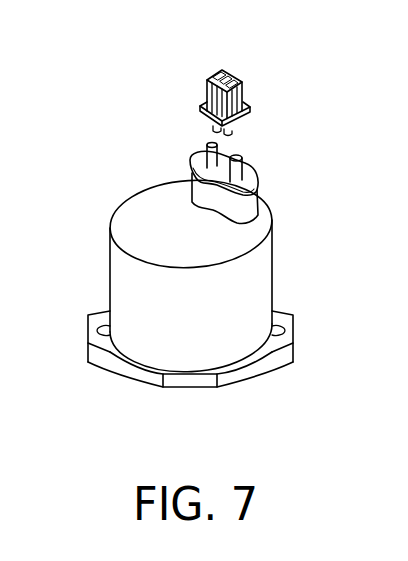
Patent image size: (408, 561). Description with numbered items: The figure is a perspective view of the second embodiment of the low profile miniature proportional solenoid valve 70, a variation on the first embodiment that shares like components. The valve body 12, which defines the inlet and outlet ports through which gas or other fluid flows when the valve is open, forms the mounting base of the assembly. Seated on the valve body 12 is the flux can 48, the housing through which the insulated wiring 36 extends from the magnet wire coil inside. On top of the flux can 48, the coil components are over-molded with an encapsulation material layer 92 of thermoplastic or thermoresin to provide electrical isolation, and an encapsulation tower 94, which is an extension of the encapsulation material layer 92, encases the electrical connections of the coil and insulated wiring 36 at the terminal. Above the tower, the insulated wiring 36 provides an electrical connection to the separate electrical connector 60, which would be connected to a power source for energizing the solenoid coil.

The proportional solenoid valve 70 is at (302, 79).
The electrical connector 60 is at (200, 105).
The insulated wiring 36 is at (206, 158).
The encapsulation tower 94 is at (190, 174).
The encapsulation material layer 92 is at (258, 190).
The flux can 48 is at (130, 278).
The valve body 12 is at (190, 388).